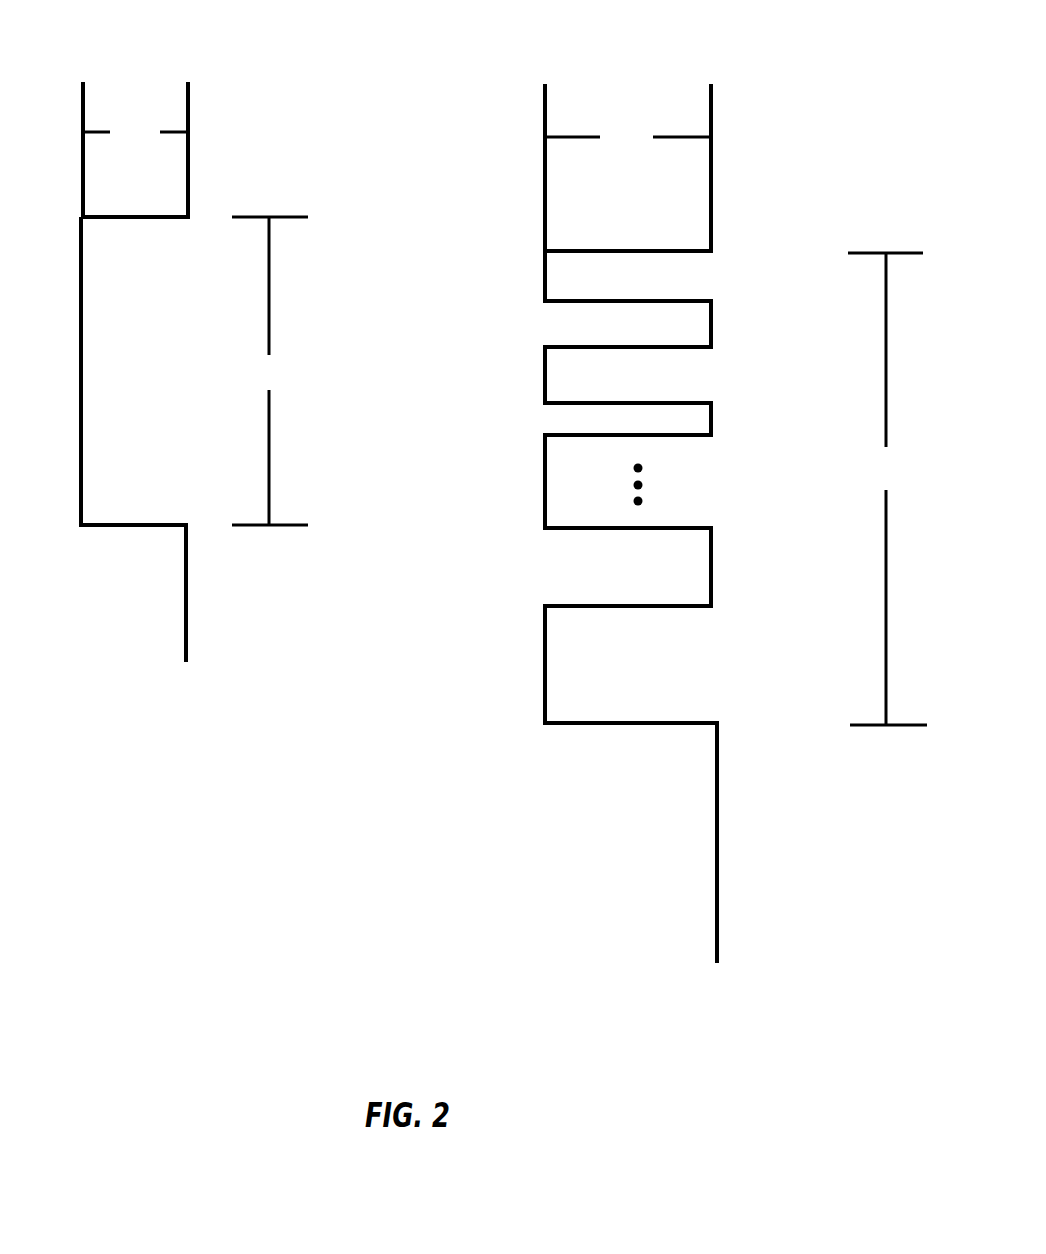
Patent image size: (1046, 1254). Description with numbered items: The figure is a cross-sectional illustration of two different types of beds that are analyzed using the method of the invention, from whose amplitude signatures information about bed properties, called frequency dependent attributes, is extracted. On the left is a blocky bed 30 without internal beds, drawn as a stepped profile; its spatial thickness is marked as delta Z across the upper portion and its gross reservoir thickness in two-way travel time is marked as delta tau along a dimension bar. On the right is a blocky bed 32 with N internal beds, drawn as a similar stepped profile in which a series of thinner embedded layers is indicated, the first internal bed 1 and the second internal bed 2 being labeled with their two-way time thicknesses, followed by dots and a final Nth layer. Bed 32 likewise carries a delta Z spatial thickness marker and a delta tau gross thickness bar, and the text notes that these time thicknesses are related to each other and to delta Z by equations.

The bed 30 is at (179, 711).
The bed 32 is at (736, 556).
The first internal bed of thickness δT1 1 is at (667, 329).
The second internal bed of thickness δT2 2 is at (667, 424).